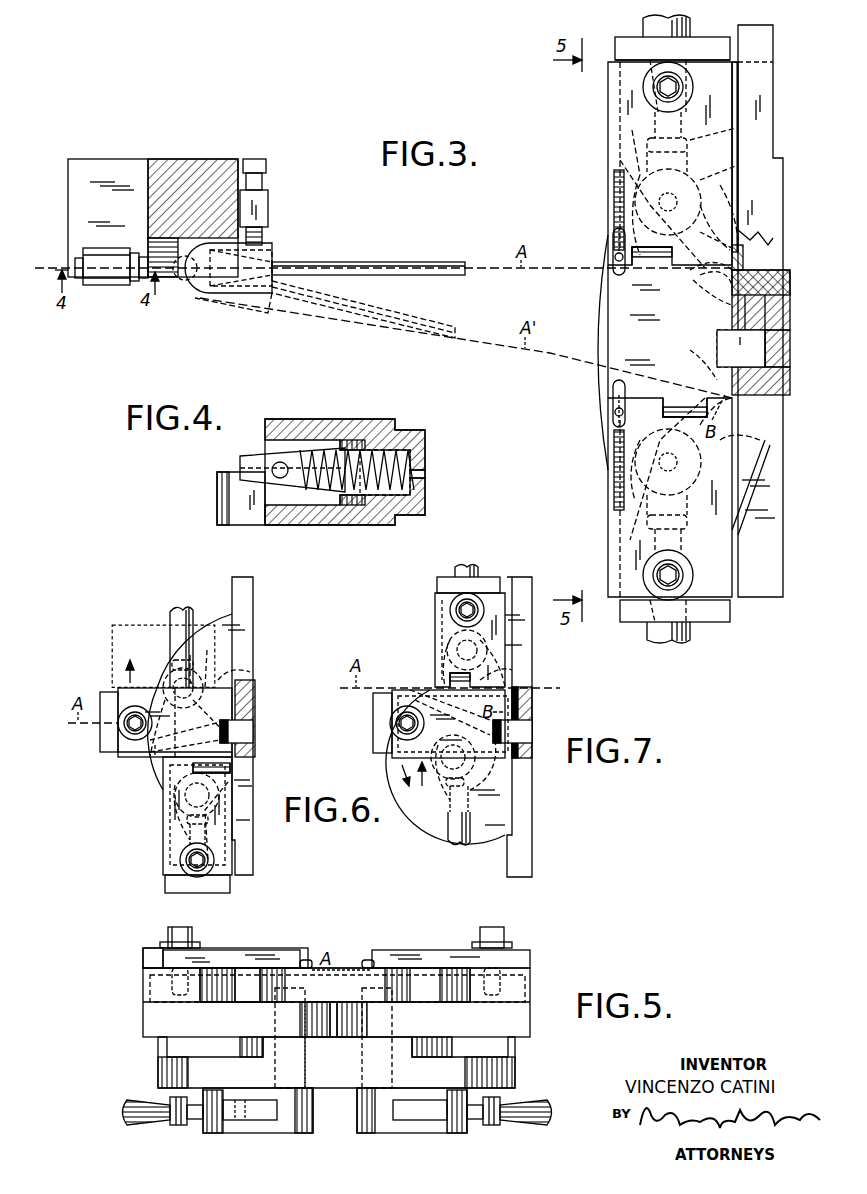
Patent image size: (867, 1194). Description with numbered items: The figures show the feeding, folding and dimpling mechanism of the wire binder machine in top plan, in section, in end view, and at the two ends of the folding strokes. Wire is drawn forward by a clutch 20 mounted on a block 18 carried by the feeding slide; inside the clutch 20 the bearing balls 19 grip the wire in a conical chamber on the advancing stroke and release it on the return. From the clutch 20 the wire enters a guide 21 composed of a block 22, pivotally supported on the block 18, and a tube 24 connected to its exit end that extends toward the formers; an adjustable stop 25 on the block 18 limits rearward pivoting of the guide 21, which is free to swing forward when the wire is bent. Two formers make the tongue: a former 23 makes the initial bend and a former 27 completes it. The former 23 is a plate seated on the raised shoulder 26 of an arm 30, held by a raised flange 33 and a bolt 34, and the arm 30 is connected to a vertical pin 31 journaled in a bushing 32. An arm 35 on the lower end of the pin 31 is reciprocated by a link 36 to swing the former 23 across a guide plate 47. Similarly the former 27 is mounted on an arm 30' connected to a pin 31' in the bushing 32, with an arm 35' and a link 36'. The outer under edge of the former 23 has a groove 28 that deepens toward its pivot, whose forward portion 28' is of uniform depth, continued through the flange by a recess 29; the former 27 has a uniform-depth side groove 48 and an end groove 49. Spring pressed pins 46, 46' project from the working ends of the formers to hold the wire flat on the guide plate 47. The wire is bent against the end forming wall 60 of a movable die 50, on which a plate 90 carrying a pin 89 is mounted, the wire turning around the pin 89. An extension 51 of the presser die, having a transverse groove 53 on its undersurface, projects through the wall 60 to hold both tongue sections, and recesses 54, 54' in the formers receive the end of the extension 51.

In FIG. 3, the block 18 is at (165, 159).
In FIG. 4, the bearing balls 19 is at (280, 462).
In FIG. 3, the clutch 20 is at (108, 288).
In FIG. 4, the clutch 20 is at (343, 416).
In FIG. 3, the guide 21 is at (205, 305).
In FIG. 3, the block 22 is at (268, 254).
In FIG. 3, the former 23 is at (600, 170).
In FIG. 6, the former 23 is at (118, 683).
In FIG. 7, the former 23 is at (430, 652).
In FIG. 5, the former 23 is at (253, 950).
In FIG. 3, the tube 24 is at (410, 276).
In FIG. 3, the adjustable stop 25 is at (276, 203).
In FIG. 3, the raised shoulder 26 is at (736, 576).
In FIG. 6, the raised shoulder 26 is at (197, 860).
In FIG. 7, the raised shoulder 26 is at (407, 723).
In FIG. 5, the raised shoulder 26 is at (150, 985).
In FIG. 3, the former 27 is at (603, 482).
In FIG. 6, the former 27 is at (158, 868).
In FIG. 7, the former 27 is at (450, 753).
In FIG. 5, the former 27 is at (458, 950).
In FIG. 3, the groove 28 is at (638, 193).
In FIG. 6, the groove 28 is at (176, 728).
In FIG. 7, the groove 28 is at (452, 649).
In FIG. 5, the groove 28 is at (203, 959).
In FIG. 5, the groove portion 28' is at (273, 959).
In FIG. 6, the recess 29 is at (104, 750).
In FIG. 7, the recess 29 is at (382, 723).
In FIG. 5, the recess 29 is at (143, 966).
In FIG. 3, the arm 30 is at (629, 99).
In FIG. 6, the arm 30 is at (121, 767).
In FIG. 5, the arm 30 is at (239, 1018).
In FIG. 5, the arm 30' is at (441, 1018).
In FIG. 3, the pin 31 is at (721, 227).
In FIG. 6, the pin 31 is at (249, 700).
In FIG. 7, the pin 31 is at (537, 712).
In FIG. 5, the pin 31 is at (305, 1038).
In FIG. 3, the pin 31' is at (763, 424).
In FIG. 5, the pin 31' is at (395, 1038).
In FIG. 5, the bushing 32 is at (175, 1072).
In FIG. 3, the raised flange 33 is at (626, 44).
In FIG. 6, the raised flange 33 is at (105, 700).
In FIG. 7, the raised flange 33 is at (468, 585).
In FIG. 5, the raised flange 33 is at (150, 950).
In FIG. 3, the bolt 34 is at (678, 86).
In FIG. 6, the bolt 34 is at (148, 724).
In FIG. 7, the bolt 34 is at (452, 608).
In FIG. 5, the bolt 34 is at (182, 930).
In FIG. 3, the arm 35 is at (736, 311).
In FIG. 6, the arm 35 is at (200, 726).
In FIG. 7, the arm 35 is at (474, 727).
In FIG. 5, the arm 35 is at (258, 1125).
In FIG. 3, the arm 35' is at (759, 487).
In FIG. 5, the arm 35' is at (412, 1125).
In FIG. 3, the link 36 is at (683, 22).
In FIG. 6, the link 36 is at (165, 647).
In FIG. 7, the link 36 is at (472, 554).
In FIG. 5, the link 36 is at (146, 1111).
In FIG. 3, the link 36' is at (668, 646).
In FIG. 7, the link 36' is at (459, 815).
In FIG. 5, the link 36' is at (511, 1094).
In FIG. 3, the spring pressed pin 46 is at (618, 270).
In FIG. 5, the spring pressed pin 46 is at (321, 936).
In FIG. 3, the spring pressed pin 46' is at (592, 403).
In FIG. 5, the spring pressed pin 46' is at (375, 940).
In FIG. 3, the guide plate 47 is at (629, 352).
In FIG. 5, the guide plate 47 is at (343, 968).
In FIG. 3, the groove 48 is at (612, 528).
In FIG. 6, the groove 48 is at (168, 848).
In FIG. 7, the groove 48 is at (428, 695).
In FIG. 5, the groove 48 is at (425, 968).
In FIG. 6, the groove 49 is at (168, 795).
In FIG. 7, the groove 49 is at (495, 740).
In FIG. 5, the groove 49 is at (380, 970).
In FIG. 3, the movable die 50 is at (792, 398).
In FIG. 3, the extension 51 is at (762, 356).
In FIG. 6, the extension 51 is at (248, 731).
In FIG. 7, the extension 51 is at (515, 732).
In FIG. 3, the transverse groove 53 is at (717, 343).
In FIG. 3, the recess 54 is at (652, 273).
In FIG. 6, the recess 54 is at (185, 737).
In FIG. 7, the recess 54 is at (465, 691).
In FIG. 3, the recess 54' is at (684, 386).
In FIG. 6, the recess 54' is at (240, 770).
In FIG. 3, the end forming wall 60 is at (741, 348).
In FIG. 3, the pin 89 is at (712, 287).
In FIG. 3, the plate 90 is at (732, 300).